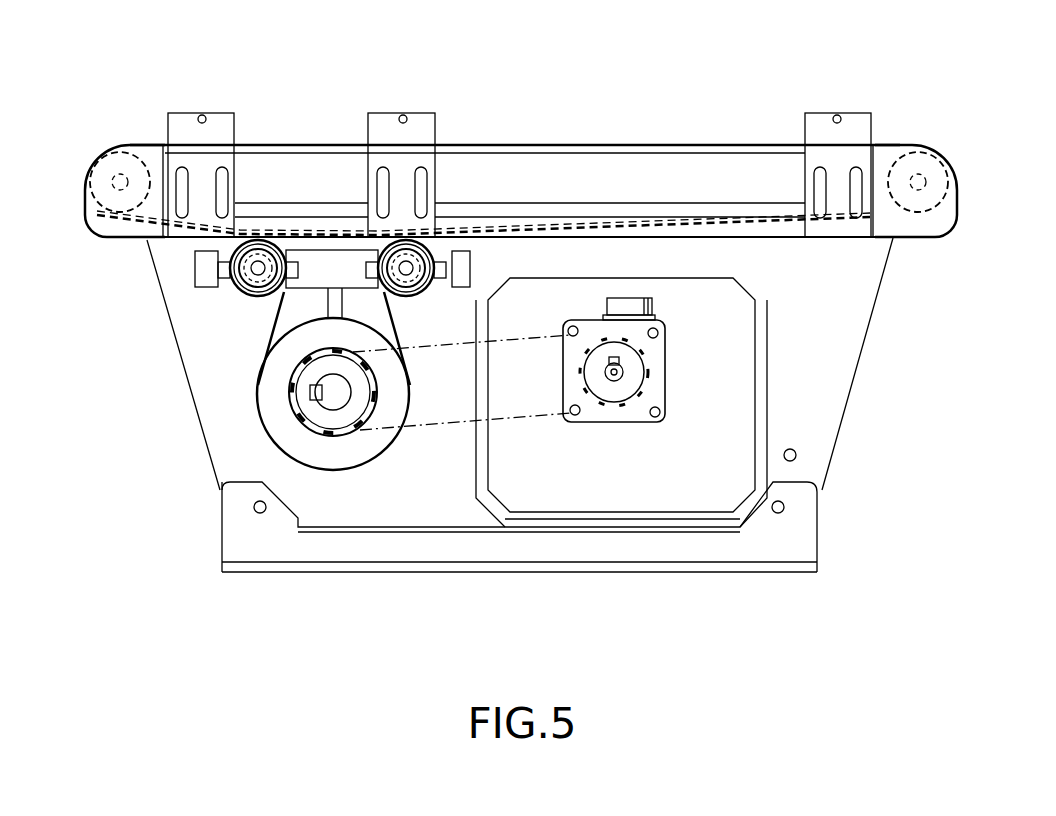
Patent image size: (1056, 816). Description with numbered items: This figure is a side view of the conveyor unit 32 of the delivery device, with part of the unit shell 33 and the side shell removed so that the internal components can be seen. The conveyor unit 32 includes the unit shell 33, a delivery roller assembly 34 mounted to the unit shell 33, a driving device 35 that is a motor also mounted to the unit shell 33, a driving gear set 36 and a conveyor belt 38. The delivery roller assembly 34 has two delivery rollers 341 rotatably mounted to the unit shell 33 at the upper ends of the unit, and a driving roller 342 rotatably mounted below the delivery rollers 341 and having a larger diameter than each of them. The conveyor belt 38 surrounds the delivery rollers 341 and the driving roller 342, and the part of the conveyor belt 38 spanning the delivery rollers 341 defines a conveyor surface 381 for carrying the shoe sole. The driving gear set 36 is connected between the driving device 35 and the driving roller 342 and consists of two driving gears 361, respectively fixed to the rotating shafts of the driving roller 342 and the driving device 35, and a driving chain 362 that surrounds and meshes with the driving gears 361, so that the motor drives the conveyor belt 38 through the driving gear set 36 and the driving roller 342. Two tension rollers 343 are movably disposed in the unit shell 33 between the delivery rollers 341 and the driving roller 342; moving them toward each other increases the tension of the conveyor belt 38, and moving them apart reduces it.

The conveyor unit 32 is at (591, 405).
The unit shell 33 is at (862, 318).
The delivery roller assembly 34 is at (220, 394).
The driving roller 342 is at (270, 390).
The delivery roller 341 is at (125, 165).
The tension roller 343 is at (437, 258).
The driving device 35 is at (640, 415).
The driving gear set 36 is at (468, 489).
The driving gear 361 is at (330, 418).
The driving chain 362 is at (428, 425).
The conveyor belt 38 is at (521, 173).
The conveyor surface 381 is at (273, 145).